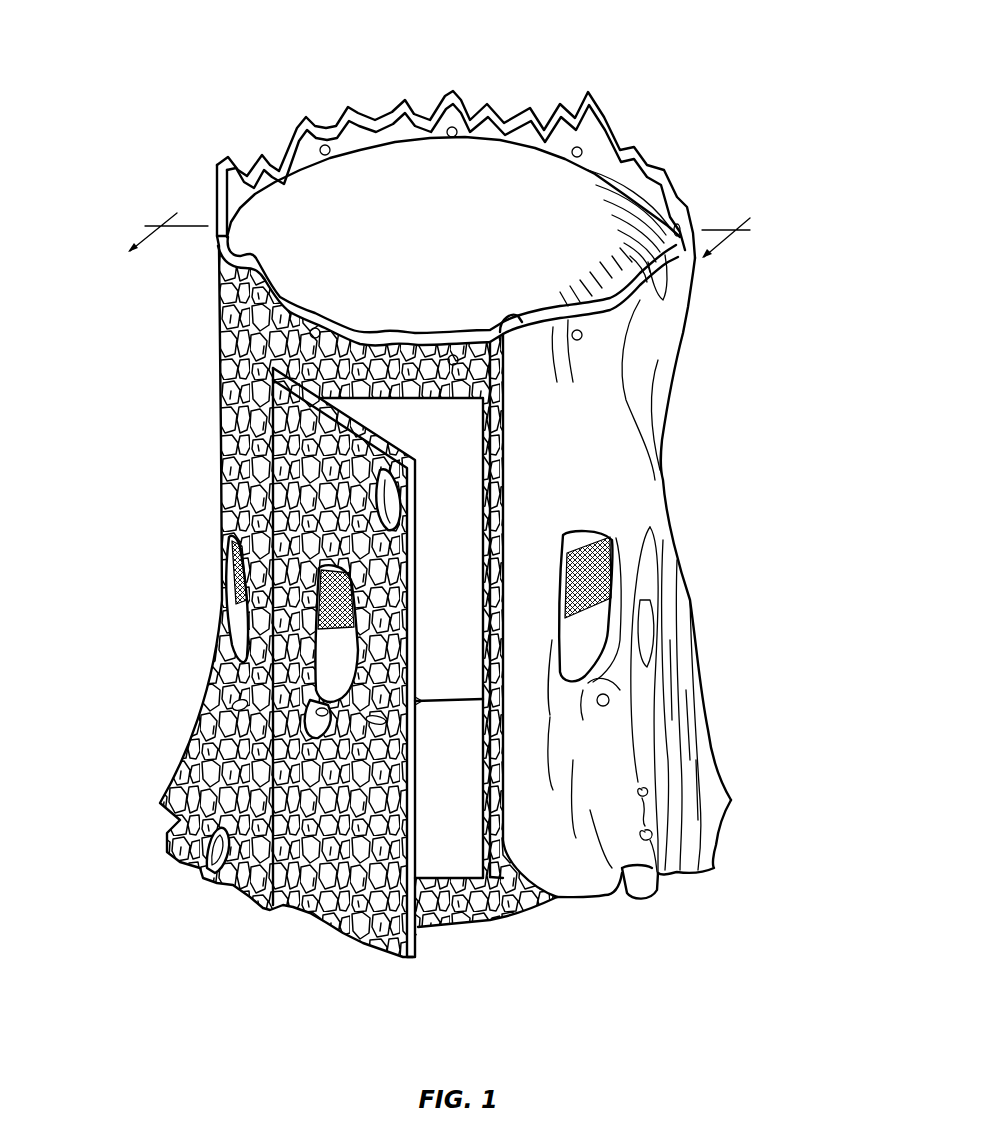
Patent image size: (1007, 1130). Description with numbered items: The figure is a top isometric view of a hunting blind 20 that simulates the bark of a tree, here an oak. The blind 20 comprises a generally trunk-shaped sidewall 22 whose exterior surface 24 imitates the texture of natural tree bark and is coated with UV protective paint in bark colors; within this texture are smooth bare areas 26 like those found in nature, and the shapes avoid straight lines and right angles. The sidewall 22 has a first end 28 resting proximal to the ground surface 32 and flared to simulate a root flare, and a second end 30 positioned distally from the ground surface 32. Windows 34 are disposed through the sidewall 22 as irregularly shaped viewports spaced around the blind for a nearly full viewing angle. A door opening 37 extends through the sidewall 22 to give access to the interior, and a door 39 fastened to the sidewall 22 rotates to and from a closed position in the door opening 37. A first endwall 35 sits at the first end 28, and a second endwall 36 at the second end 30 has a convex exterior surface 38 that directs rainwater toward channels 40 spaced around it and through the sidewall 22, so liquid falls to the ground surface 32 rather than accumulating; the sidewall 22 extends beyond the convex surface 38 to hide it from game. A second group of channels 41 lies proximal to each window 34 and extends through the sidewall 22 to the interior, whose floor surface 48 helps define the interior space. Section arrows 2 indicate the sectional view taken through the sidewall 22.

The hunting blind 20 is at (770, 56).
The trunk-shaped sidewall 22 is at (214, 184).
The exterior surface 24 is at (236, 422).
The bare areas 26 is at (647, 376).
The first end 28 is at (744, 857).
The second end 30 is at (752, 203).
The ground surface 32 is at (49, 905).
The windows 34 is at (240, 618).
The first endwall 35 is at (463, 785).
The second endwall 36 is at (403, 200).
The door opening 37 is at (466, 459).
The convex exterior surface 38 is at (462, 237).
The door 39 is at (417, 568).
The channels 40 is at (328, 146).
The second group of channels 41 is at (232, 704).
The floor surface 48 is at (439, 832).
The section line 2 is at (446, 234).